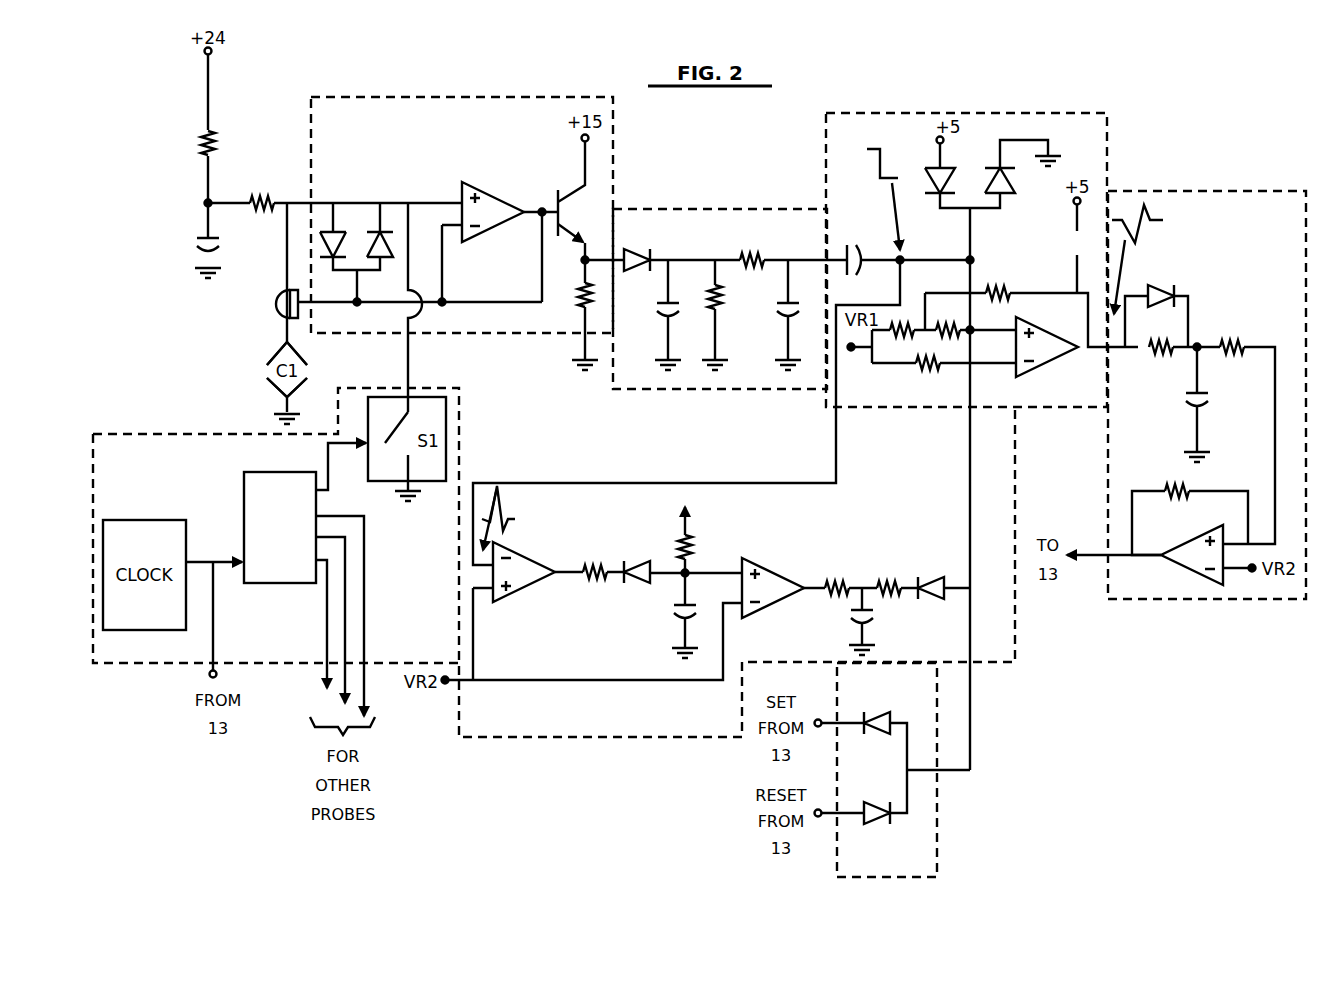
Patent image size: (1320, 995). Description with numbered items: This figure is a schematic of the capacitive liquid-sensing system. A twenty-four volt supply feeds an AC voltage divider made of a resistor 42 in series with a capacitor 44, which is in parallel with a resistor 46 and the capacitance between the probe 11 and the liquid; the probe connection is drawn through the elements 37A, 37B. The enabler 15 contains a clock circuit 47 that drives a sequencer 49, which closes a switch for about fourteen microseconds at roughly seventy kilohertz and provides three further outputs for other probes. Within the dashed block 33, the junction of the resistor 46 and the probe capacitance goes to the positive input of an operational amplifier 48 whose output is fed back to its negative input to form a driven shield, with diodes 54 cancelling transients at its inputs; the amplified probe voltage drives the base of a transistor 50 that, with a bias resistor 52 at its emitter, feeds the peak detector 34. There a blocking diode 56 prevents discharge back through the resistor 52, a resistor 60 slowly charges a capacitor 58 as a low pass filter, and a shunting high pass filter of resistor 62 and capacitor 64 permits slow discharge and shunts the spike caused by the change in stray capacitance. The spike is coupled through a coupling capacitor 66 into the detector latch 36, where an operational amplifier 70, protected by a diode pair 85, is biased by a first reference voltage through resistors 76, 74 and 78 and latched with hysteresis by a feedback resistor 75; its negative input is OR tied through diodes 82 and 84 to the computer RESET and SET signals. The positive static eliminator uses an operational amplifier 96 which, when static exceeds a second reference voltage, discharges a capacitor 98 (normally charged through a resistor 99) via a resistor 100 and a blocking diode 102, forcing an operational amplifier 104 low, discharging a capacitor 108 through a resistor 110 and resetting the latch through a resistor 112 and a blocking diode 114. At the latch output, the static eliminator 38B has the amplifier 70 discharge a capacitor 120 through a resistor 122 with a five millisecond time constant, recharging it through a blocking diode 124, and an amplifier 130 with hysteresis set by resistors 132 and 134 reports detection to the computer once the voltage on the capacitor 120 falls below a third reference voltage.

The resistor 42 is at (213, 133).
The resistor 46 is at (264, 195).
The capacitor 44 is at (228, 244).
The current source circuit 33 is at (352, 96).
The diodes 54 is at (357, 238).
The operational amplifier 48 is at (480, 190).
The driving transistor 50 is at (558, 202).
The bias resistor 52 is at (578, 306).
The peak detector 34 is at (702, 207).
The detector latch 36 is at (825, 166).
The blocking diode 56 is at (636, 250).
The resistor 60 is at (757, 257).
The capacitor 64 is at (660, 322).
The resistor 62 is at (720, 312).
The capacitor 58 is at (780, 326).
The input coupling capacitor 66 is at (858, 246).
The diode pair 85 is at (958, 183).
The feedback resistor 75 is at (997, 289).
The operational amplifier 70 is at (1040, 334).
The resistor 76 is at (908, 322).
The resistor 74 is at (962, 334).
The resistor 78 is at (928, 374).
The static eliminator 38B is at (1176, 188).
The blocking diode 124 is at (1163, 286).
The resistor 132 is at (1242, 343).
The resistor 122 is at (1160, 366).
The capacitor 120 is at (1208, 411).
The resistor 134 is at (1172, 482).
The amplifier 130 is at (1177, 567).
The operational amplifier 96 is at (505, 588).
The resistor 100 is at (590, 562).
The blocking diode 102 is at (637, 558).
The resistor 99 is at (698, 546).
The capacitor 98 is at (672, 632).
The operational amplifier 104 is at (760, 616).
The resistor 110 is at (833, 574).
The resistor 112 is at (883, 574).
The blocking diode 114 is at (928, 573).
The capacitor 108 is at (870, 630).
The diode 82 is at (872, 712).
The diode 84 is at (883, 832).
The enabler 15 is at (165, 433).
The clock circuit 47 is at (135, 520).
The sequencer 49 is at (273, 472).
The electrode 37A is at (272, 299).
The electrode 37B is at (267, 318).
The probe 11 is at (268, 358).